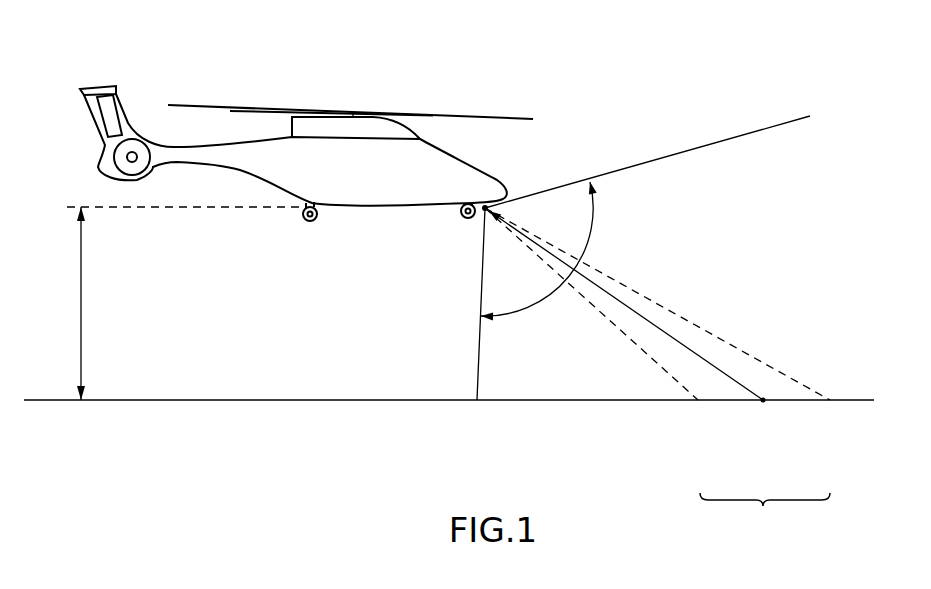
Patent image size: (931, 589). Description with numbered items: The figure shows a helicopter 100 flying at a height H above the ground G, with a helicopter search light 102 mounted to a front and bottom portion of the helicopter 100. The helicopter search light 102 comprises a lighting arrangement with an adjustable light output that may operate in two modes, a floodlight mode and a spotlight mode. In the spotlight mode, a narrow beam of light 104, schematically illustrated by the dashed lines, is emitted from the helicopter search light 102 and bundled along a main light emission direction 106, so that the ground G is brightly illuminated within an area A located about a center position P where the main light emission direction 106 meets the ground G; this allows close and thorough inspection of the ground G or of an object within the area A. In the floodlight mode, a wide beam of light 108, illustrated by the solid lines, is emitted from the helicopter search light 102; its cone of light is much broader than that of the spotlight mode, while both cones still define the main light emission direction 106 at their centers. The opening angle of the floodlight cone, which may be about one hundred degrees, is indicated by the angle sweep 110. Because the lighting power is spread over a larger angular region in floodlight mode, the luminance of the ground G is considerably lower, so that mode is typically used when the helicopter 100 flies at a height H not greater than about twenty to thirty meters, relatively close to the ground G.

The helicopter 100 is at (216, 88).
The helicopter search light 102 is at (483, 210).
The narrow beam of light 104 is at (753, 332).
The main light emission direction 106 is at (742, 386).
The wide beam of light 108 is at (742, 143).
The angle sweep 110 is at (528, 305).
The height H is at (81, 303).
The ground G is at (183, 400).
The center position P is at (763, 402).
The area A is at (765, 512).